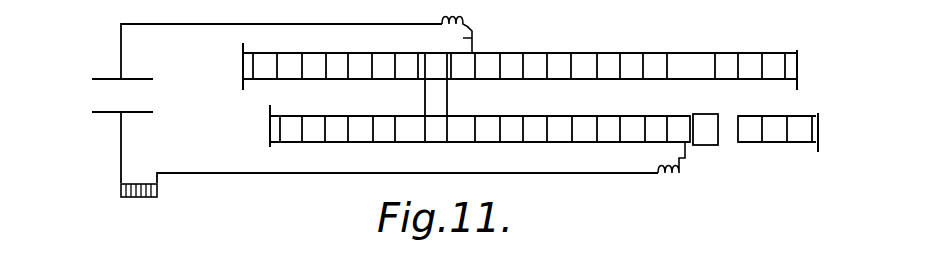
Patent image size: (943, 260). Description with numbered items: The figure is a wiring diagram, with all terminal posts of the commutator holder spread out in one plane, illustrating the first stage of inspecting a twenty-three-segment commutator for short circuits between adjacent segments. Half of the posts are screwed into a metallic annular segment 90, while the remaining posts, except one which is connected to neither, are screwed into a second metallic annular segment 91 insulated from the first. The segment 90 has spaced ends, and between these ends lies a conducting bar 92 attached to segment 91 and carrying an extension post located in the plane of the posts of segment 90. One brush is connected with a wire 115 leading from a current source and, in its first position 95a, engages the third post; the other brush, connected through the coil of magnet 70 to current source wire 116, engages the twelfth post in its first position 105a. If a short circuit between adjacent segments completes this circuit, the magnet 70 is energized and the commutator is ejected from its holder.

The wire 115 is at (97, 78).
The current source wire 116 is at (98, 113).
The magnet 70 is at (135, 198).
The metallic annular segment 90 is at (290, 79).
The metallic annular segment 91 is at (408, 143).
The conducting bar 92 is at (430, 98).
The first position of brush 95 95a is at (462, 42).
The first position of brush 105 105a is at (680, 150).